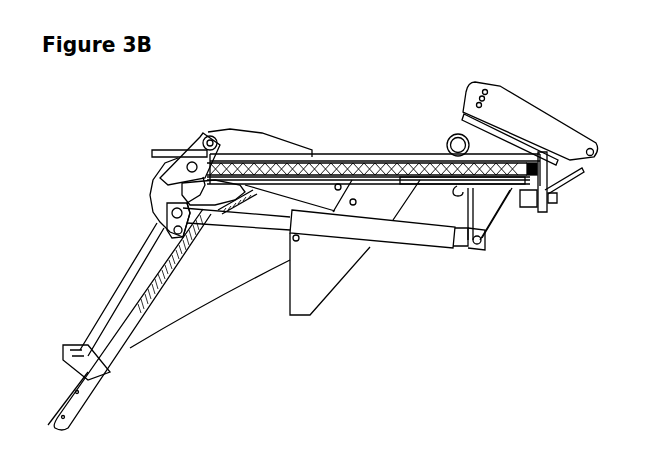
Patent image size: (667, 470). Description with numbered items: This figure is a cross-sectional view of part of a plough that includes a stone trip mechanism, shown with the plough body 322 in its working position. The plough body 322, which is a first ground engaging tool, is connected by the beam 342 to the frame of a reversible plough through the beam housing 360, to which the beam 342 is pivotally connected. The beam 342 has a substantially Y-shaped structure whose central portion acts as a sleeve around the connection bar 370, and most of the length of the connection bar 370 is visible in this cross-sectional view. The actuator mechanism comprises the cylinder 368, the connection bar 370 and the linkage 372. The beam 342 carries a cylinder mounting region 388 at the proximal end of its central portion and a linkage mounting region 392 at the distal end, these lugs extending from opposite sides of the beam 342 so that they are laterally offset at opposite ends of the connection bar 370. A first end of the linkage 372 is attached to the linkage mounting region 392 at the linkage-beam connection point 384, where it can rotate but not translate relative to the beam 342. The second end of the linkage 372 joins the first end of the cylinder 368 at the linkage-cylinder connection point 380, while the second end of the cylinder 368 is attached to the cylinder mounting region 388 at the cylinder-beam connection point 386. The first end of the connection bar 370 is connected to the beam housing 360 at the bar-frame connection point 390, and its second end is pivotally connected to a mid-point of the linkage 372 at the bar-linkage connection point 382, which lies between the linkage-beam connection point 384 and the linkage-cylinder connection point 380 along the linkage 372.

The plough body 322 is at (147, 355).
The beam 342 is at (411, 147).
The beam housing 360 is at (497, 82).
The cylinder 368 is at (400, 248).
The connection bar 370 is at (357, 156).
The linkage 372 is at (150, 192).
The linkage-cylinder connection point 380 is at (176, 214).
The bar-linkage connection point 382 is at (190, 167).
The linkage-beam connection point 384 is at (207, 142).
The cylinder-beam connection point 386 is at (481, 249).
The cylinder mounting region 388 is at (503, 220).
The bar-frame connection point 390 is at (555, 175).
The linkage mounting region 392 is at (230, 128).